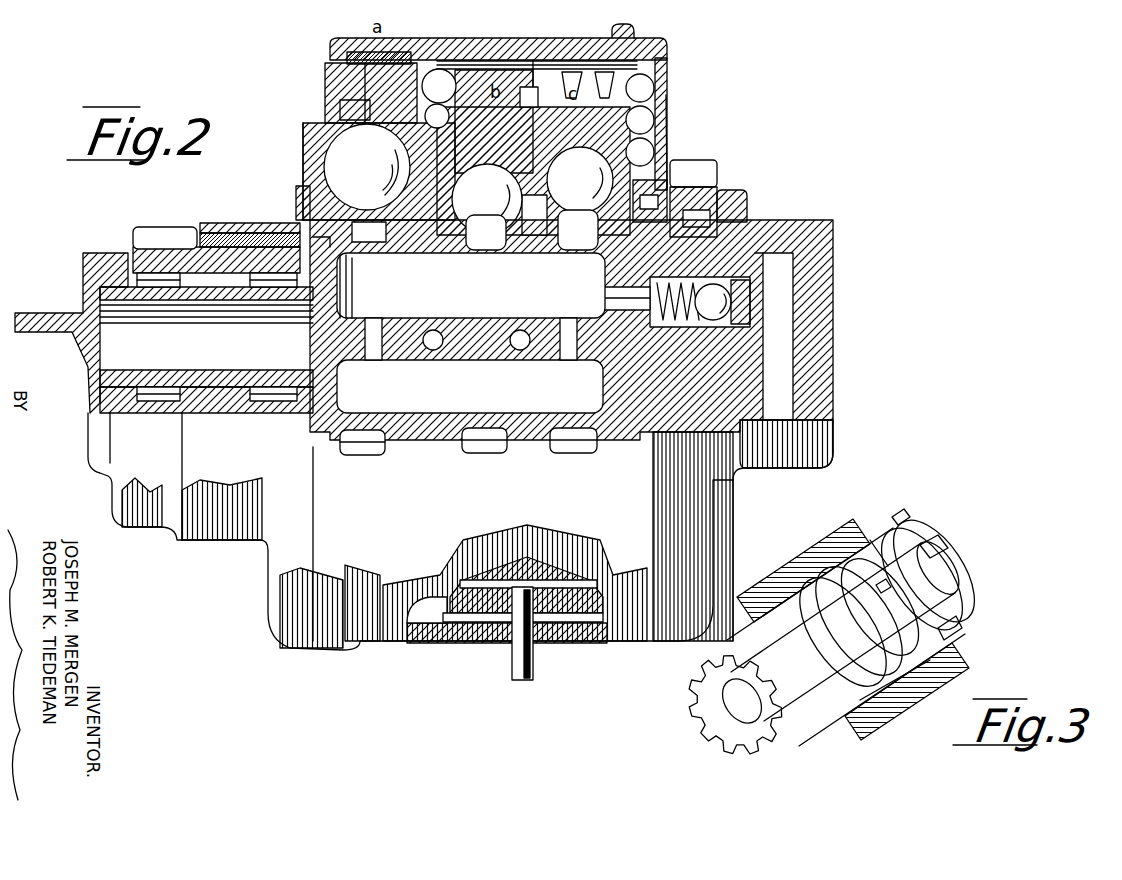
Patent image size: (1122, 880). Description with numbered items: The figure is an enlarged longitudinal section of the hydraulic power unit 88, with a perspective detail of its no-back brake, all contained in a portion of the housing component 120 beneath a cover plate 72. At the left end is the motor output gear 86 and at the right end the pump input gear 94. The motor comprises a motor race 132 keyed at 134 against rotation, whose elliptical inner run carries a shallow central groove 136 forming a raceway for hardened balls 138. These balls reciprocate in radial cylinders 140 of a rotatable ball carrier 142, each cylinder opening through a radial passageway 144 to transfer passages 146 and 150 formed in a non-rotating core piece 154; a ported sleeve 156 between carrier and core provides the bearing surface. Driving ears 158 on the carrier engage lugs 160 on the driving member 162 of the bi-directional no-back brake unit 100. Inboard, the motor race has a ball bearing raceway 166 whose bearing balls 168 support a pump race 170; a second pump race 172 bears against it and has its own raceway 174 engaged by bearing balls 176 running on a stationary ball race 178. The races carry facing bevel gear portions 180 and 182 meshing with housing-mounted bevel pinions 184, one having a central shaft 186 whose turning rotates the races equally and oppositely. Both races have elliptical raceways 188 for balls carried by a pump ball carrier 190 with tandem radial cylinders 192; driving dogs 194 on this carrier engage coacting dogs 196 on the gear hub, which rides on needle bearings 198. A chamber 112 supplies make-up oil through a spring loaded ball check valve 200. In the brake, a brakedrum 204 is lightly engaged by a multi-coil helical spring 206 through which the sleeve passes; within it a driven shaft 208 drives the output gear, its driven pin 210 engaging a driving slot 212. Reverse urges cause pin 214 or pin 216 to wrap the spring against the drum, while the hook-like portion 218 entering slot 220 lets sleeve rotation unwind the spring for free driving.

In FIG. 2, the cover plate 72 is at (562, 50).
In FIG. 2, the motor output gear 86 is at (178, 228).
In FIG. 3, the motor output gear 86 is at (680, 702).
In FIG. 2, the hydraulic power unit 88 is at (690, 124).
In FIG. 2, the pump input gear 94 is at (718, 167).
In FIG. 2, the bi-directional no-back brake unit 100 is at (240, 218).
In FIG. 3, the bi-directional no-back brake unit 100 is at (808, 540).
In FIG. 2, the chamber 112 is at (777, 336).
In FIG. 2, the housing component 120 is at (330, 46).
In FIG. 2, the motor race 132 is at (330, 80).
In FIG. 2, the key 134 is at (347, 58).
In FIG. 2, the central groove 136 is at (345, 106).
In FIG. 2, the hardened balls 138 is at (367, 167).
In FIG. 2, the cylinders 140 is at (303, 125).
In FIG. 2, the ball carrier 142 is at (303, 150).
In FIG. 2, the radial passageway 144 is at (368, 242).
In FIG. 2, the transfer passage 146 is at (471, 285).
In FIG. 2, the transfer passage 150 is at (470, 386).
In FIG. 2, the core piece 154 is at (537, 362).
In FIG. 2, the ported sleeve 156 is at (405, 248).
In FIG. 2, the driving ears 158 is at (296, 188).
In FIG. 2, the lugs 160 is at (277, 240).
In FIG. 3, the lugs 160 is at (898, 519).
In FIG. 2, the driving member 162 is at (233, 255).
In FIG. 3, the driving member 162 is at (885, 550).
In FIG. 2, the ball bearing raceway 166 is at (440, 68).
In FIG. 2, the bearing balls 168 is at (470, 58).
In FIG. 2, the pump race 170 is at (535, 104).
In FIG. 2, the second pump race 172 is at (556, 110).
In FIG. 2, the ball bearing raceway 174 is at (630, 42).
In FIG. 2, the bearing balls 176 is at (648, 97).
In FIG. 2, the stationary ball race 178 is at (668, 78).
In FIG. 2, the bevel gear portion 180 is at (440, 640).
In FIG. 2, the bevel gear portion 182 is at (590, 618).
In FIG. 2, the bevel pinions 184 is at (490, 620).
In FIG. 2, the central shaft 186 is at (515, 682).
In FIG. 2, the elliptical raceways 188 is at (532, 190).
In FIG. 2, the ball carrier 190 is at (472, 248).
In FIG. 2, the radial cylinders 192 is at (548, 235).
In FIG. 2, the driving dogs 194 is at (660, 185).
In FIG. 2, the coacting dogs 196 is at (718, 190).
In FIG. 2, the needle bearings 198 is at (748, 222).
In FIG. 2, the spring loaded ball check valve 200 is at (697, 302).
In FIG. 3, the brakedrum 204 is at (960, 672).
In FIG. 3, the multi-coil helical spring 206 is at (952, 646).
In FIG. 3, the driven shaft 208 is at (800, 730).
In FIG. 3, the driven pin 210 is at (948, 552).
In FIG. 3, the driving slot 212 is at (935, 548).
In FIG. 3, the pin 214 is at (825, 637).
In FIG. 3, the pin 216 is at (893, 588).
In FIG. 3, the hook-like portion 218 is at (880, 725).
In FIG. 3, the slot 220 is at (832, 686).